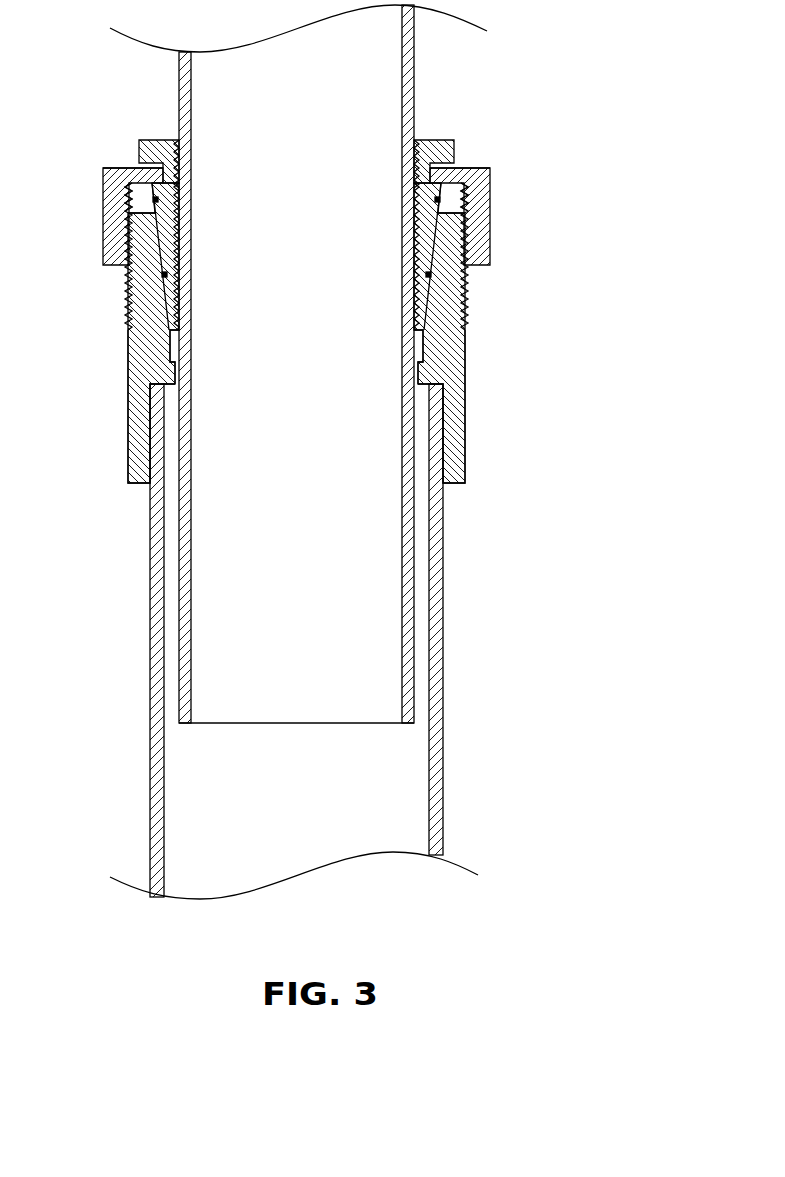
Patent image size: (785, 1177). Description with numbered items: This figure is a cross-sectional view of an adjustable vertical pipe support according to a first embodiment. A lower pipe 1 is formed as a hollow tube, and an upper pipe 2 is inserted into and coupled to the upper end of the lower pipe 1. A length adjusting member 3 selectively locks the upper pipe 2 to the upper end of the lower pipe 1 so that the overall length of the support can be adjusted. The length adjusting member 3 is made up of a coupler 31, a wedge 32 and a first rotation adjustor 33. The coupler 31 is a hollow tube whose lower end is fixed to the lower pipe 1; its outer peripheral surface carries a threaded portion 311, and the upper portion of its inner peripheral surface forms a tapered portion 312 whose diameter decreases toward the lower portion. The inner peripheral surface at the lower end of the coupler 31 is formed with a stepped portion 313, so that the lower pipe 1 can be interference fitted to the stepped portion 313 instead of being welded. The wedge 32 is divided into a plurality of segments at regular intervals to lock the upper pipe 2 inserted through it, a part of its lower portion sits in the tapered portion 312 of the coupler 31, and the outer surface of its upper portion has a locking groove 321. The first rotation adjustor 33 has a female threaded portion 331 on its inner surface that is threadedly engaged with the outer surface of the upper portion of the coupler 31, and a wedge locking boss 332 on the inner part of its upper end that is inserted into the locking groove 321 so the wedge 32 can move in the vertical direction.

The lower pipe 1 is at (443, 707).
The upper pipe 2 is at (415, 65).
The length adjusting member 3 is at (329, 292).
The coupler 31 is at (318, 333).
The threaded portion 311 is at (128, 292).
The tapered portion 312 is at (170, 343).
The stepped portion 313 is at (152, 369).
The wedge 32 is at (357, 144).
The locking groove 321 is at (155, 163).
The first rotation adjustor 33 is at (307, 196).
The female threaded portion 331 is at (128, 192).
The wedge locking boss 332 is at (145, 163).